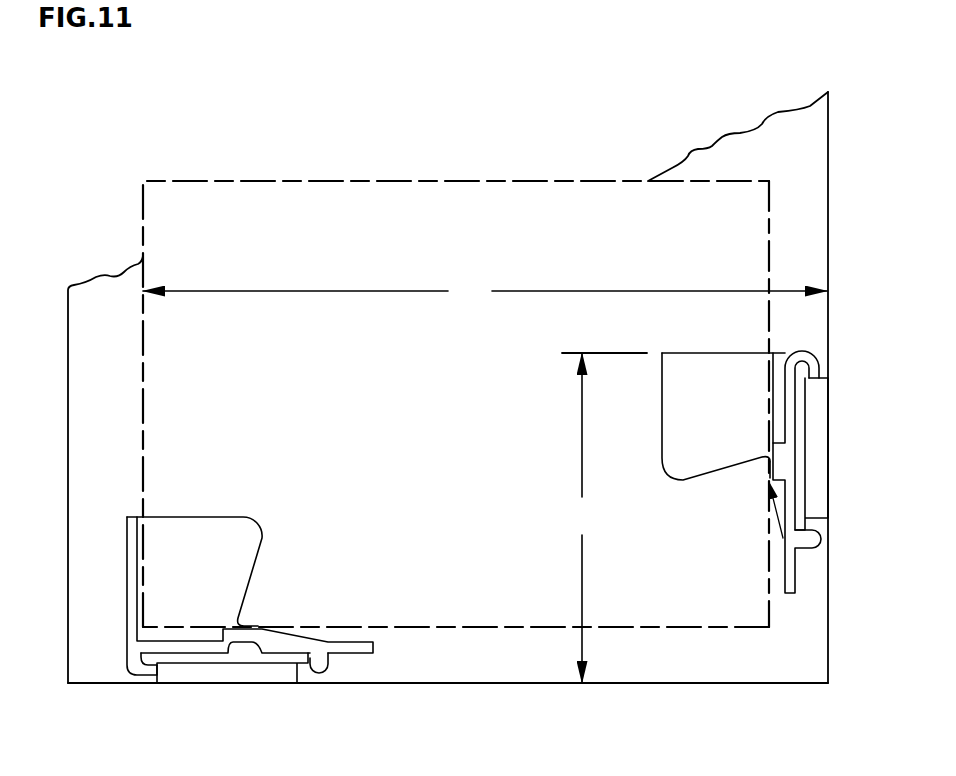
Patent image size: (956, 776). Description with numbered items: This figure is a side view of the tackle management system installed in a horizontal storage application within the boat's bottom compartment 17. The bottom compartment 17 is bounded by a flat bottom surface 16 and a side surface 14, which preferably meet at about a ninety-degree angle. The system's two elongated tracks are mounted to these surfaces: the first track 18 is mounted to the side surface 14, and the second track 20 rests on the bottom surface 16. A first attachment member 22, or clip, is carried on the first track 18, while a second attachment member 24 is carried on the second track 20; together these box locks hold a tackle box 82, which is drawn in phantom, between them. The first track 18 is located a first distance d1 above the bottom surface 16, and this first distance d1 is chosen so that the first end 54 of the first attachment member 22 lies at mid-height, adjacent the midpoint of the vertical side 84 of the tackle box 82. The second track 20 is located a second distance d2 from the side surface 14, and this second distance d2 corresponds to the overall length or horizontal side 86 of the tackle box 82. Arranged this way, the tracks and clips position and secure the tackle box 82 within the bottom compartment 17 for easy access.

The side surface 14 is at (829, 182).
The bottom surface 16 is at (480, 683).
The bottom compartment 17 is at (623, 152).
The first track 18 is at (815, 478).
The second track 20 is at (250, 670).
The first attachment member 22 is at (721, 503).
The second attachment member 24 is at (275, 532).
The first end 54 is at (803, 353).
The tackle box 82 is at (333, 180).
The vertical side 84 is at (768, 263).
The horizontal side 86 is at (408, 627).
The first distance d1 is at (604, 518).
The second distance d2 is at (485, 291).